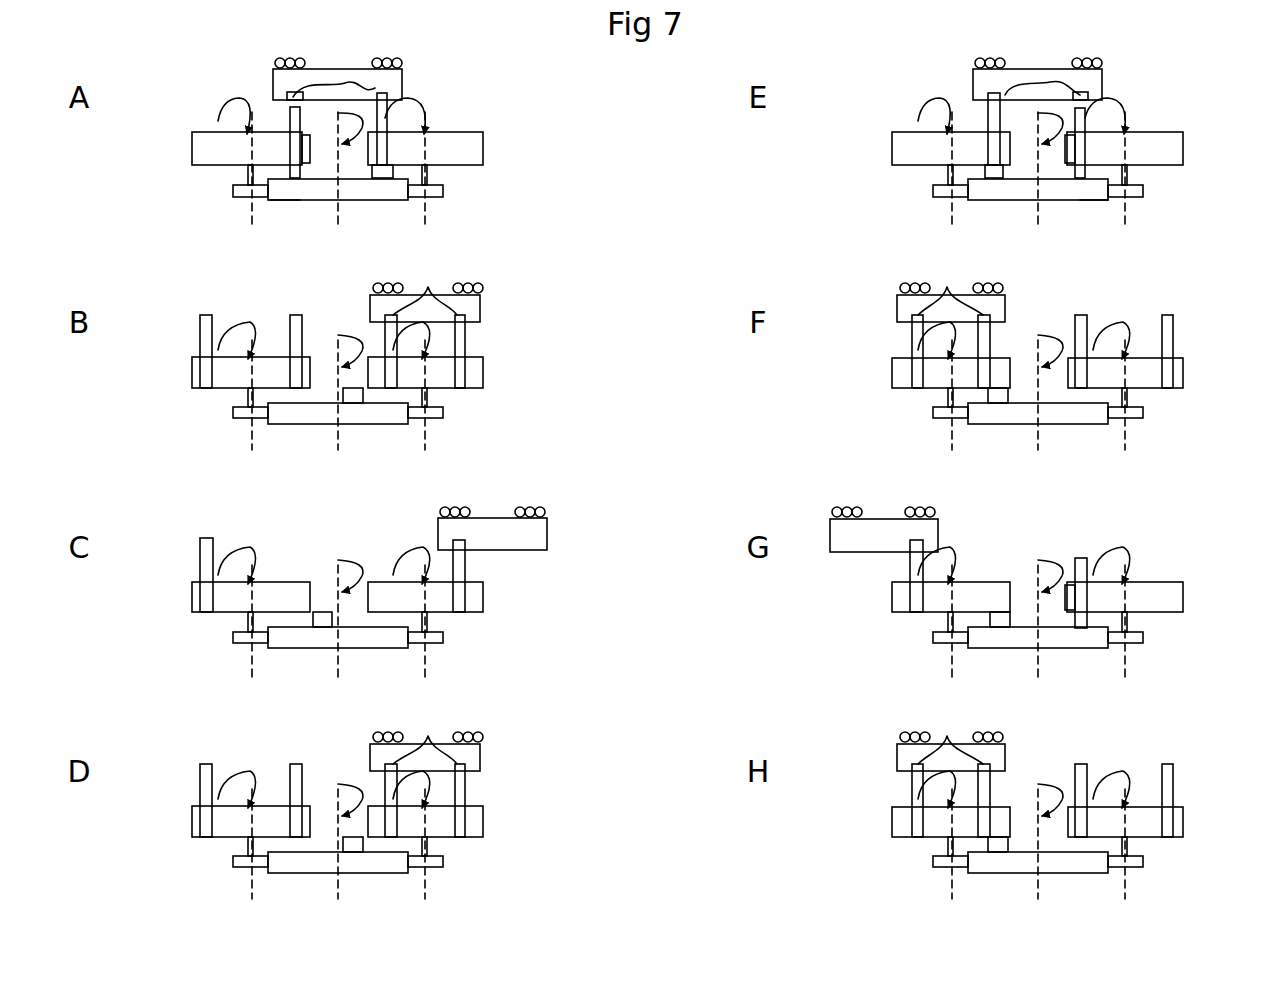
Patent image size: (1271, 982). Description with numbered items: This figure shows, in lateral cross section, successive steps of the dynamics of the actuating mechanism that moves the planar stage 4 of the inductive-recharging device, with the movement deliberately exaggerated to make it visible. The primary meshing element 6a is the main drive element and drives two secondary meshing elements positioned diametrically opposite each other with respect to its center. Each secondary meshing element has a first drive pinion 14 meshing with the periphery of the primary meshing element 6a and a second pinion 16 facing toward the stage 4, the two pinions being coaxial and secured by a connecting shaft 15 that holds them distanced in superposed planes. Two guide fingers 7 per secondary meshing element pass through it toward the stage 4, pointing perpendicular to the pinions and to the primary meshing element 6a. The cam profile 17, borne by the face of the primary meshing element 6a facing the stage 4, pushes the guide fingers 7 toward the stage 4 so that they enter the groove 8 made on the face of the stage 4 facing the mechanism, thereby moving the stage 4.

In FIG. 7A, the stage 4 is at (343, 83).
In FIG. 7B, the stage 4 is at (406, 291).
In FIG. 7C, the stage 4 is at (492, 512).
In FIG. 7D, the stage 4 is at (406, 740).
In FIG. 7E, the stage 4 is at (1037, 66).
In FIG. 7F, the stage 4 is at (971, 291).
In FIG. 7G, the stage 4 is at (884, 513).
In FIG. 7H, the stage 4 is at (971, 740).
In FIG. 7A, the groove 8 is at (377, 88).
In FIG. 7B, the groove 8 is at (425, 283).
In FIG. 7C, the groove 8 is at (437, 506).
In FIG. 7D, the groove 8 is at (425, 732).
In FIG. 7E, the groove 8 is at (1040, 64).
In FIG. 7F, the groove 8 is at (950, 283).
In FIG. 7G, the groove 8 is at (936, 507).
In FIG. 7H, the groove 8 is at (950, 732).
In FIG. 7A, the guide finger 7 is at (290, 118).
In FIG. 7B, the guide finger 7 is at (361, 329).
In FIG. 7C, the guide finger 7 is at (332, 553).
In FIG. 7D, the guide finger 7 is at (361, 778).
In FIG. 7E, the guide finger 7 is at (1037, 114).
In FIG. 7F, the guide finger 7 is at (1014, 329).
In FIG. 7G, the guide finger 7 is at (1016, 564).
In FIG. 7H, the guide finger 7 is at (1014, 778).
In FIG. 7A, the second pinion 16 is at (210, 143).
In FIG. 7B, the second pinion 16 is at (339, 348).
In FIG. 7C, the second pinion 16 is at (346, 572).
In FIG. 7D, the second pinion 16 is at (339, 797).
In FIG. 7E, the second pinion 16 is at (1038, 130).
In FIG. 7F, the second pinion 16 is at (1038, 348).
In FIG. 7G, the second pinion 16 is at (1026, 575).
In FIG. 7H, the second pinion 16 is at (1038, 797).
In FIG. 7A, the connecting shaft 15 is at (248, 175).
In FIG. 7B, the connecting shaft 15 is at (337, 381).
In FIG. 7C, the connecting shaft 15 is at (340, 611).
In FIG. 7D, the connecting shaft 15 is at (337, 830).
In FIG. 7E, the connecting shaft 15 is at (1037, 159).
In FIG. 7F, the connecting shaft 15 is at (1037, 381).
In FIG. 7G, the connecting shaft 15 is at (1035, 613).
In FIG. 7H, the connecting shaft 15 is at (1037, 830).
In FIG. 7A, the first drive pinion 14 is at (242, 192).
In FIG. 7B, the first drive pinion 14 is at (337, 432).
In FIG. 7C, the first drive pinion 14 is at (337, 657).
In FIG. 7D, the first drive pinion 14 is at (337, 881).
In FIG. 7E, the first drive pinion 14 is at (1037, 210).
In FIG. 7F, the first drive pinion 14 is at (1037, 432).
In FIG. 7G, the first drive pinion 14 is at (1036, 657).
In FIG. 7H, the first drive pinion 14 is at (1037, 881).
In FIG. 7A, the cam profile 17 is at (378, 175).
In FIG. 7B, the cam profile 17 is at (338, 430).
In FIG. 7C, the cam profile 17 is at (338, 653).
In FIG. 7D, the cam profile 17 is at (338, 879).
In FIG. 7E, the cam profile 17 is at (1038, 204).
In FIG. 7F, the cam profile 17 is at (1038, 431).
In FIG. 7G, the cam profile 17 is at (1038, 655).
In FIG. 7H, the cam profile 17 is at (1038, 880).
In FIG. 7A, the primary meshing element 6a is at (293, 197).
In FIG. 7B, the primary meshing element 6a is at (291, 426).
In FIG. 7C, the primary meshing element 6a is at (275, 651).
In FIG. 7D, the primary meshing element 6a is at (291, 875).
In FIG. 7E, the primary meshing element 6a is at (1118, 219).
In FIG. 7F, the primary meshing element 6a is at (1072, 426).
In FIG. 7G, the primary meshing element 6a is at (1073, 651).
In FIG. 7H, the primary meshing element 6a is at (1072, 875).